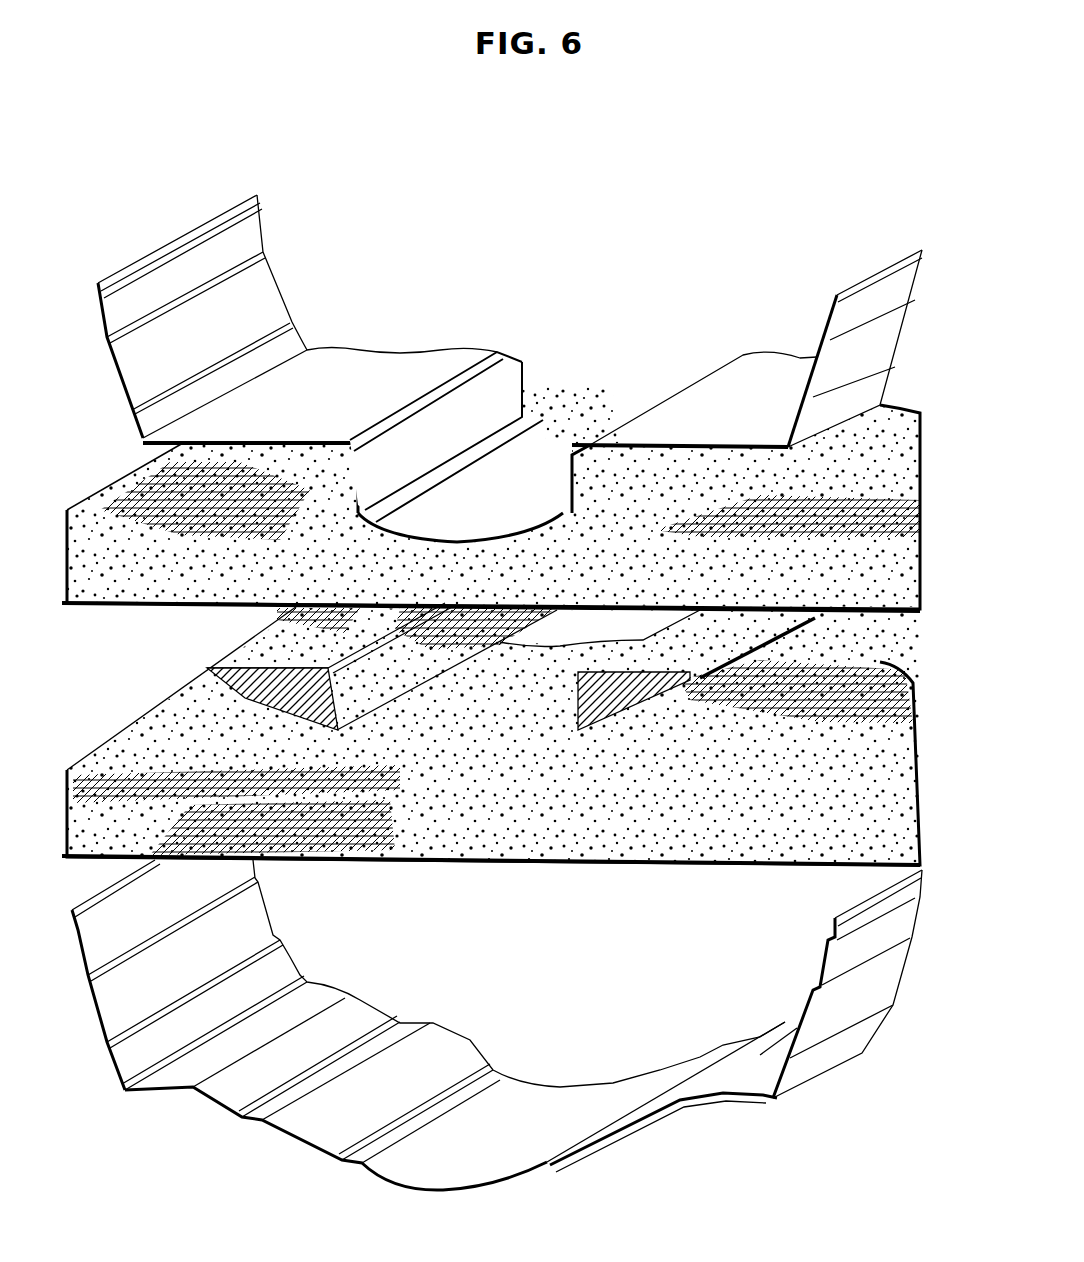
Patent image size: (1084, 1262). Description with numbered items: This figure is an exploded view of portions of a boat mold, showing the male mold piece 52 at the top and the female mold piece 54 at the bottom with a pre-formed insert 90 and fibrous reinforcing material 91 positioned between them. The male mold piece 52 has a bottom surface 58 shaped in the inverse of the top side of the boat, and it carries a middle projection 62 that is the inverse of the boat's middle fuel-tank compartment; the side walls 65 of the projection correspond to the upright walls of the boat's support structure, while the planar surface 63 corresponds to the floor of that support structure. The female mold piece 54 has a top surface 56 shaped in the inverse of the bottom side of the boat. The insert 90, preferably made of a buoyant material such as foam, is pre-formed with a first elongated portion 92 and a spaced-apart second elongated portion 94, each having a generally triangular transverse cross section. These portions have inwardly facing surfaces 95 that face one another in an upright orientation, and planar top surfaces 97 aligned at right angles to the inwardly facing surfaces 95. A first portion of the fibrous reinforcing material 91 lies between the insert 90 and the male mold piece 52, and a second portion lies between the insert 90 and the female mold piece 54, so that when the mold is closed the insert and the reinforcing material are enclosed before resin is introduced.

The male mold piece 52 is at (258, 293).
The bottom surface 58 is at (878, 343).
The planar surface 63 is at (250, 446).
The side walls 65 is at (350, 460).
The middle projection 62 is at (462, 532).
The fibrous reinforcing material 91 is at (97, 508).
The planar top surfaces 97 is at (262, 641).
The insert 90 is at (281, 666).
The first elongated portion 92 is at (206, 668).
The second elongated portion 94 is at (802, 626).
The inwardly facing surfaces 95 is at (365, 700).
The top surface 56 is at (435, 1042).
The female mold piece 54 is at (560, 1163).